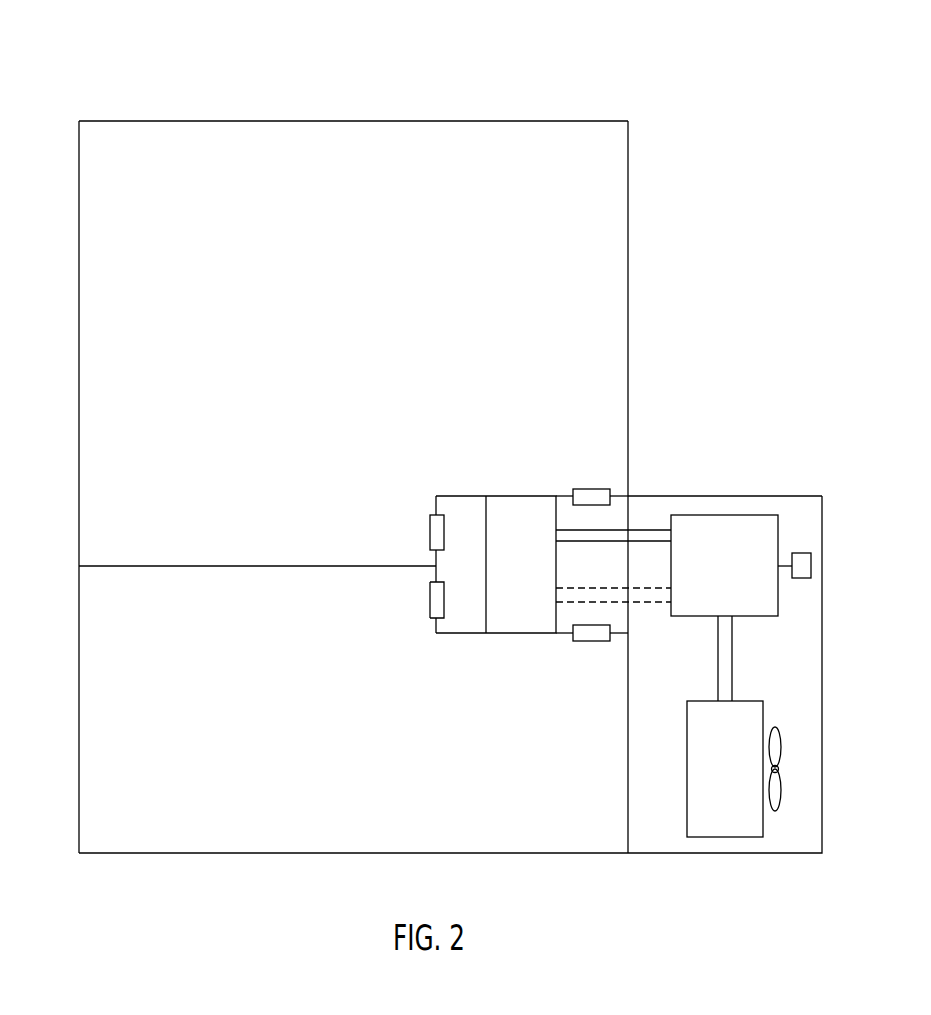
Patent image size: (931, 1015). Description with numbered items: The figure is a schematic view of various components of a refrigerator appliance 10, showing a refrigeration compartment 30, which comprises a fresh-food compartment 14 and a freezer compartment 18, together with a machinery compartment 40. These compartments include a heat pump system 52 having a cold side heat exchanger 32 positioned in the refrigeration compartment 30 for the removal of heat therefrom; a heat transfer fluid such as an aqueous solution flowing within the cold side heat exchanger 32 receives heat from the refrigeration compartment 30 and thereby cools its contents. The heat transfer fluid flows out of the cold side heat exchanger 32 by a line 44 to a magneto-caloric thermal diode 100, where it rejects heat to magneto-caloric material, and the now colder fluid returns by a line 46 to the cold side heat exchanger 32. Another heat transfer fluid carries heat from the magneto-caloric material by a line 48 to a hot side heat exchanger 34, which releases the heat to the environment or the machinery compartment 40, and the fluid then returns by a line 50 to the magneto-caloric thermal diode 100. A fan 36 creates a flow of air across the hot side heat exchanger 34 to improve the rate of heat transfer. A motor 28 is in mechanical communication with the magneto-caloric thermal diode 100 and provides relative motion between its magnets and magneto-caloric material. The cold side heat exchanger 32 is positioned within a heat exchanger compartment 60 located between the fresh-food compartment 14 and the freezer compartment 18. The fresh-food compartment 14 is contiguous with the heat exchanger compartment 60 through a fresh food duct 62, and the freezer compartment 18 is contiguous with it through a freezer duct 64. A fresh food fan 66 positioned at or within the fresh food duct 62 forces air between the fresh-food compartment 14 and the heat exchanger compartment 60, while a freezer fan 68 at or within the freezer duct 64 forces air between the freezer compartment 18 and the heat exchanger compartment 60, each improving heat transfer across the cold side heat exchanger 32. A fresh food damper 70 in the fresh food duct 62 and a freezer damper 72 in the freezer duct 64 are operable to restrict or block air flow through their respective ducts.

The refrigerator appliance 10 is at (629, 91).
The fresh-food compartment 14 is at (604, 223).
The freezer compartment 18 is at (105, 771).
The motor 28 is at (801, 567).
The refrigeration compartment 30 is at (204, 155).
The cold side heat exchanger 32 is at (509, 530).
The hot side heat exchanger 34 is at (727, 817).
The fan 36 is at (780, 772).
The machinery compartment 40 is at (796, 655).
The line 44 is at (640, 530).
The line 46 is at (610, 541).
The line 48 is at (717, 680).
The line 50 is at (734, 687).
The heat pump system 52 is at (797, 518).
The heat exchanger compartment 60 is at (460, 606).
The fresh food duct 62 is at (431, 506).
The freezer duct 64 is at (432, 620).
The fresh food fan 66 is at (436, 532).
The freezer fan 68 is at (436, 604).
The fresh food damper 70 is at (590, 496).
The freezer damper 72 is at (593, 644).
The magneto-caloric thermal diode 100 is at (717, 542).